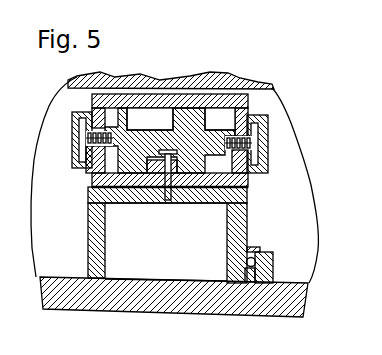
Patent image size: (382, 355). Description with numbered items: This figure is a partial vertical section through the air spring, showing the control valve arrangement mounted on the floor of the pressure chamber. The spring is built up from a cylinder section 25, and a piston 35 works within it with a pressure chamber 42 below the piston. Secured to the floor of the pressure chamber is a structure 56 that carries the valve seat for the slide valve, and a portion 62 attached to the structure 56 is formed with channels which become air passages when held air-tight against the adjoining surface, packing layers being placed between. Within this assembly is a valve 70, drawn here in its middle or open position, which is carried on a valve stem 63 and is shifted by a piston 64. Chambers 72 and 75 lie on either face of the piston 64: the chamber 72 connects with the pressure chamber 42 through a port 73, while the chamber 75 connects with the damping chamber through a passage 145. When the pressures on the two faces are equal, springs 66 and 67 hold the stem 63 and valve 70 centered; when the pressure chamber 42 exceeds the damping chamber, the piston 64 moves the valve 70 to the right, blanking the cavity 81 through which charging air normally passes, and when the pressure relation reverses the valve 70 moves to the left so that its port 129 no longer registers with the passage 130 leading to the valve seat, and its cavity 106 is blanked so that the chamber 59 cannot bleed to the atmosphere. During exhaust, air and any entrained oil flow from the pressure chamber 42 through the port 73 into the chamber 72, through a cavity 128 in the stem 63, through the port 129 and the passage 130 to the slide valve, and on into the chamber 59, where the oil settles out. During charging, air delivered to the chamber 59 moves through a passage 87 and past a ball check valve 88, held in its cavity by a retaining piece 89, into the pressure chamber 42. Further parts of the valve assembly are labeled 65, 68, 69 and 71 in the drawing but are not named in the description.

The cylinder section 25 is at (53, 292).
The piston 35 is at (118, 74).
The pressure chamber 42 is at (306, 210).
The structure 56 is at (92, 248).
The chamber 59 is at (158, 278).
The portion 62 is at (193, 98).
The valve stem 63 is at (145, 133).
The piston 64 is at (240, 105).
The bracket 65 is at (79, 112).
The spring 66 is at (255, 143).
The spring 67 is at (78, 137).
The bracket 68 is at (250, 170).
The block 69 is at (75, 152).
The valve 70 is at (120, 172).
The chamber 71 is at (143, 195).
The chamber 72 is at (145, 116).
The port 73 is at (173, 106).
The chamber 75 is at (220, 118).
The cavity 81 is at (150, 176).
The passage 87 is at (233, 281).
The ball check valve 88 is at (257, 262).
The retaining piece 89 is at (252, 250).
The cavity 106 is at (134, 176).
The cavity 128 is at (180, 131).
The port 129 is at (188, 204).
The passage 130 is at (168, 186).
The passage 145 is at (247, 194).